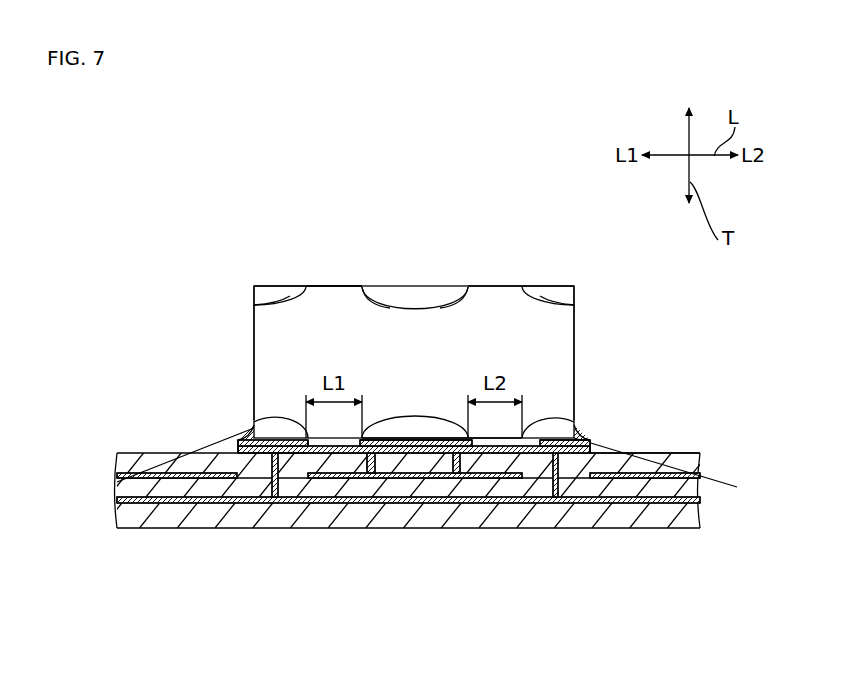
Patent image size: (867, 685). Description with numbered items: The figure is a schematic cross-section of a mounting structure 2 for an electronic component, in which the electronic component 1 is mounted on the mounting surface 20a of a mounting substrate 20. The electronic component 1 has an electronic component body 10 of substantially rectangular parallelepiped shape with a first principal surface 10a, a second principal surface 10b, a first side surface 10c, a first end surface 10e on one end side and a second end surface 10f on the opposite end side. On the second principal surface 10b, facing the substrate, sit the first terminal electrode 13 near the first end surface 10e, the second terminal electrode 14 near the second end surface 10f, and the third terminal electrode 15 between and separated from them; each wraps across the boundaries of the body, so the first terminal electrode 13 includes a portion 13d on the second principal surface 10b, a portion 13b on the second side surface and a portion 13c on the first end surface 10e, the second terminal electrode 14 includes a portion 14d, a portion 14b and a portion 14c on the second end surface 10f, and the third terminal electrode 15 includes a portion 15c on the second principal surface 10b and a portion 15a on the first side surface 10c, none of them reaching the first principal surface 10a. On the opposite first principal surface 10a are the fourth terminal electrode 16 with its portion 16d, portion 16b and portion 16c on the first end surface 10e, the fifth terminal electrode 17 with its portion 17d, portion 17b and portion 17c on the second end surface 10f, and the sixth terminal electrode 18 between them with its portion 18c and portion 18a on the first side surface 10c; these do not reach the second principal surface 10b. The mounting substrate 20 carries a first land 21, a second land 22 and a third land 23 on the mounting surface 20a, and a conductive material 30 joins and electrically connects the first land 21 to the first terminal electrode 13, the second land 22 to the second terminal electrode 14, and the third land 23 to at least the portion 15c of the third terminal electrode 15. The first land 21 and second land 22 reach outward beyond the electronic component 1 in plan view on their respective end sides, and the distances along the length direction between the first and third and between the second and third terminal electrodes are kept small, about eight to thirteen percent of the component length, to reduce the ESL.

The electronic component 1 is at (483, 249).
The mounting structure 2 is at (451, 209).
The electronic component body 10 is at (326, 285).
The first principal surface 10a is at (352, 287).
The second principal surface 10b is at (494, 442).
The first side surface 10c is at (254, 340).
The first end surface 10e is at (254, 376).
The second end surface 10f is at (575, 370).
The first terminal electrode 13 is at (265, 442).
The portion on the second side surface 13b is at (276, 480).
The portion on the first end surface 13c is at (117, 478).
The portion on the second principal surface 13d is at (308, 443).
The second terminal electrode 14 is at (565, 442).
The portion on the second side surface 14b is at (555, 485).
The portion on the second end surface 14c is at (677, 469).
The portion on the second principal surface 14d is at (548, 432).
The third terminal electrode 15 is at (417, 442).
The portion on the first side surface 15a is at (371, 465).
The portion on the second principal surface 15c is at (381, 433).
The fourth terminal electrode 16 is at (277, 285).
The portion on the second side surface 16b is at (268, 294).
The portion on the first end surface 16c is at (254, 300).
The portion on the first principal surface 16d is at (293, 287).
The fifth terminal electrode 17 is at (566, 285).
The portion on the second side surface 17b is at (574, 292).
The portion on the second end surface 17c is at (562, 300).
The portion on the first principal surface 17d is at (547, 287).
The sixth terminal electrode 18 is at (411, 285).
The portion on the first side surface 18a is at (385, 292).
The portion on the first principal surface 18c is at (432, 287).
The mounting substrate 20 is at (683, 530).
The mounting surface 20a is at (682, 453).
The first land 21 is at (282, 432).
The second land 22 is at (577, 432).
The third land 23 is at (440, 449).
The conductive material 30 is at (300, 449).